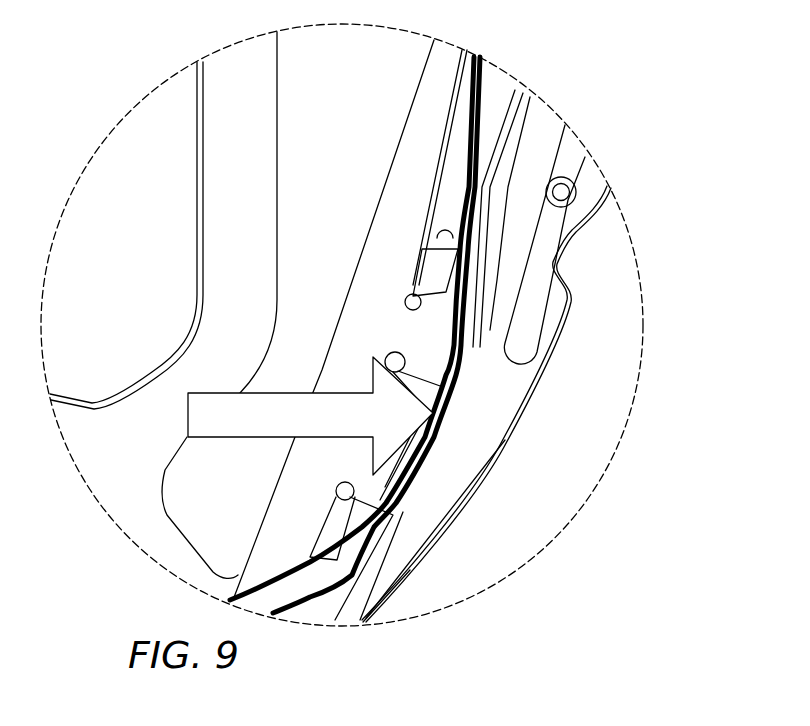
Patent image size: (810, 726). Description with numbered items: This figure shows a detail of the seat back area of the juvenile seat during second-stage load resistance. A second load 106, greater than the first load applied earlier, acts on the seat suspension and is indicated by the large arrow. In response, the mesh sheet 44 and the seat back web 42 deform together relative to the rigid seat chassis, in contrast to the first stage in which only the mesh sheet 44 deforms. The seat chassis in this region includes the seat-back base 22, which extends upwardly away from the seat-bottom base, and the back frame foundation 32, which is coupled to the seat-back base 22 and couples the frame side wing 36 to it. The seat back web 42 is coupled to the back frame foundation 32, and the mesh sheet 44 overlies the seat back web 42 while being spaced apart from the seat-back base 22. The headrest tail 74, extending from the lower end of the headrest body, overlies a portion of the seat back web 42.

The seat-back base 22 is at (596, 240).
The back frame foundation 32 is at (417, 187).
The frame side wing 36 is at (186, 155).
The seat back web 42 is at (466, 383).
The mesh sheet 44 is at (440, 331).
The headrest tail 74 is at (482, 148).
The second load 106 is at (268, 393).